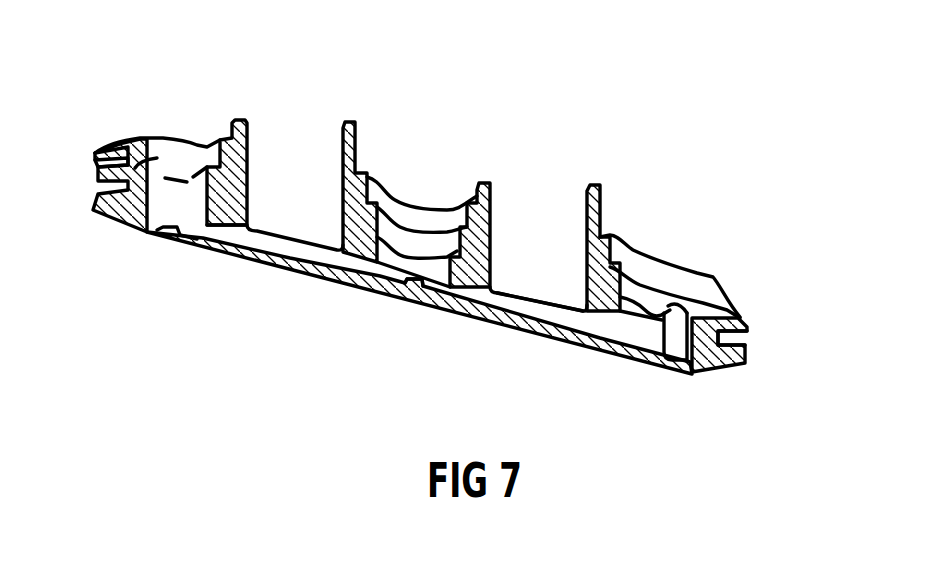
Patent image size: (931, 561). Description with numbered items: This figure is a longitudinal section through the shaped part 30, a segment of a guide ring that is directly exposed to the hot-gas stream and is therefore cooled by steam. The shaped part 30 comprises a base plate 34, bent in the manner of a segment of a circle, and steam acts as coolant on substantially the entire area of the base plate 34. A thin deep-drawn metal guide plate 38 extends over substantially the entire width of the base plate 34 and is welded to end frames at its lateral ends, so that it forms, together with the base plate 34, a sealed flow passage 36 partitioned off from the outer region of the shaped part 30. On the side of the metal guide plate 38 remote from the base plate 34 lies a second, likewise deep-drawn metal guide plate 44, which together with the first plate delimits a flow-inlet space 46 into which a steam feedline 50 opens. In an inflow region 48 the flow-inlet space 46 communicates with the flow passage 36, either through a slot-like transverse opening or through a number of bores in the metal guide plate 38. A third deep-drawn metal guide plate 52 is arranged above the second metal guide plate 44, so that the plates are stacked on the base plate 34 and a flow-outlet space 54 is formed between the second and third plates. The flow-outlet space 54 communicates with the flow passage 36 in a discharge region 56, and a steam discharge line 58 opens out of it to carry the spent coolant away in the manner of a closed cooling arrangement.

The shaped part 30 is at (741, 316).
The base plate 34 is at (244, 262).
The flow passage 36 is at (412, 296).
The metal guide plate 38 is at (662, 318).
The second metal guide plate 44 is at (413, 227).
The flow-inlet space 46 is at (648, 297).
The inflow region 48 is at (735, 329).
The steam feedline 50 is at (297, 140).
The third metal guide plate 52 is at (190, 138).
The flow-outlet space 54 is at (100, 168).
The discharge region 56 is at (154, 203).
The steam discharge line 58 is at (535, 205).